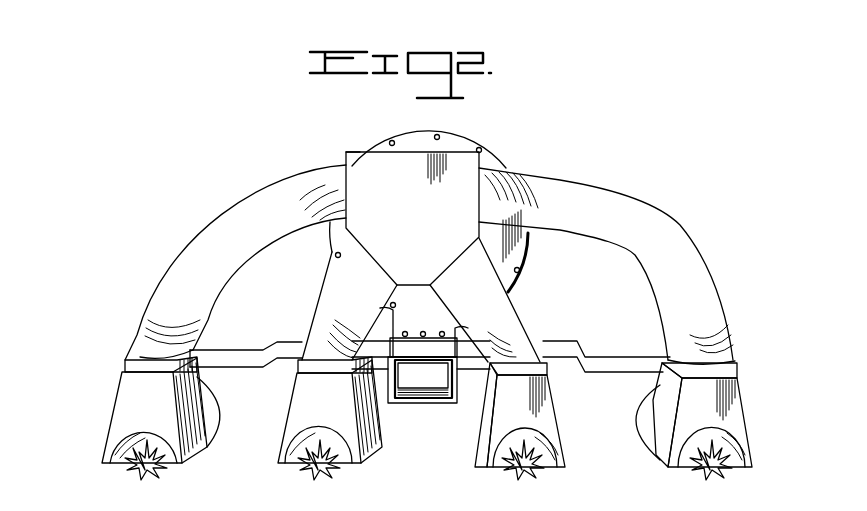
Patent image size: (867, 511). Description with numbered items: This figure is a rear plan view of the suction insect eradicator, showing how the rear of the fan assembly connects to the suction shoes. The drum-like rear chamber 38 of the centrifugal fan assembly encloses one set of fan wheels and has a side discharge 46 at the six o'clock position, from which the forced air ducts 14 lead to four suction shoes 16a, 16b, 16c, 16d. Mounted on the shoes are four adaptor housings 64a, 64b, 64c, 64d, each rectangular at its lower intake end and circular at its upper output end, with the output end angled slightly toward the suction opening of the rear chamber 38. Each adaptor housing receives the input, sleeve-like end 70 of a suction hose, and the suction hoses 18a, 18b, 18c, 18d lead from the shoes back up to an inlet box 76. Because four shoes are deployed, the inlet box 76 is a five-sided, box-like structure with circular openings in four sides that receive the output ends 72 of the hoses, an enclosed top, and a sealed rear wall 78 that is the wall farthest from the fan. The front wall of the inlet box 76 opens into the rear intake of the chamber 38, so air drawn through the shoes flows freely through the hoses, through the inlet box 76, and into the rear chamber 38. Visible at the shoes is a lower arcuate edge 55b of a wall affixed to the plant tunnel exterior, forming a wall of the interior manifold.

The forced air ducts 14 is at (613, 363).
The suction shoe 16a is at (123, 413).
The suction shoe 16b is at (297, 425).
The suction shoe 16c is at (560, 423).
The suction shoe 16d is at (733, 423).
The suction hose 18a is at (225, 203).
The suction hose 18b is at (330, 302).
The suction hose 18c is at (510, 310).
The suction hose 18d is at (678, 218).
The rear chamber 38 is at (488, 150).
The side discharge 46 is at (430, 393).
The lower arcuate edge 55b is at (313, 428).
The adaptor housing 64a is at (137, 353).
The adaptor housing 64b is at (307, 363).
The adaptor housing 64c is at (555, 373).
The adaptor housing 64d is at (720, 368).
The sleeve-like end 70 is at (190, 350).
The output ends 72 is at (342, 162).
The inlet box 76 is at (352, 152).
The rear wall 78 is at (414, 216).